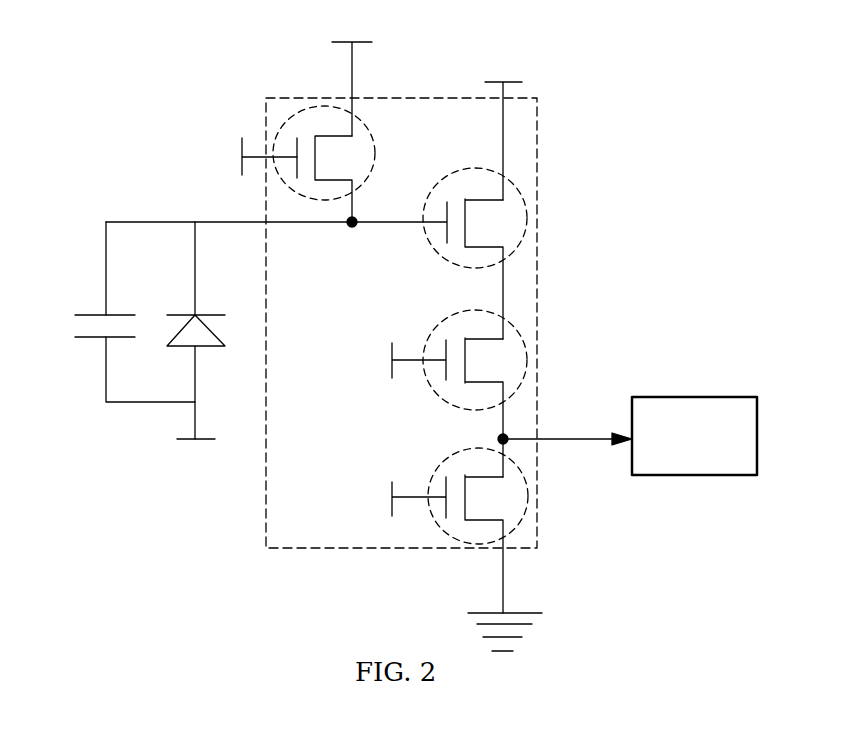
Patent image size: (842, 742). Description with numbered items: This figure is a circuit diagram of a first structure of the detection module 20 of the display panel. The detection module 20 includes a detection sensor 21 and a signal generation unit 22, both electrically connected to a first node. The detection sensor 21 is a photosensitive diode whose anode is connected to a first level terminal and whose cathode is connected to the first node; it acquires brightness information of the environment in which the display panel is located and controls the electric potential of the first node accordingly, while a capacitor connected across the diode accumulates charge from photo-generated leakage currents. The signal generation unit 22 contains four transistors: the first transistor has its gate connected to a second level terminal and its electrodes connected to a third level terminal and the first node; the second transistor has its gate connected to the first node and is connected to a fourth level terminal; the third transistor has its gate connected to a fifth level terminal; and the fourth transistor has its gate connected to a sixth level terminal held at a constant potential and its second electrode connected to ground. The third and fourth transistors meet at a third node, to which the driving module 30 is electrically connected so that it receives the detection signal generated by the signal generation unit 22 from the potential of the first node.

The detection module 20 is at (143, 119).
The detection sensor 21 is at (197, 314).
The signal generation unit 22 is at (537, 153).
The driving module 30 is at (675, 397).